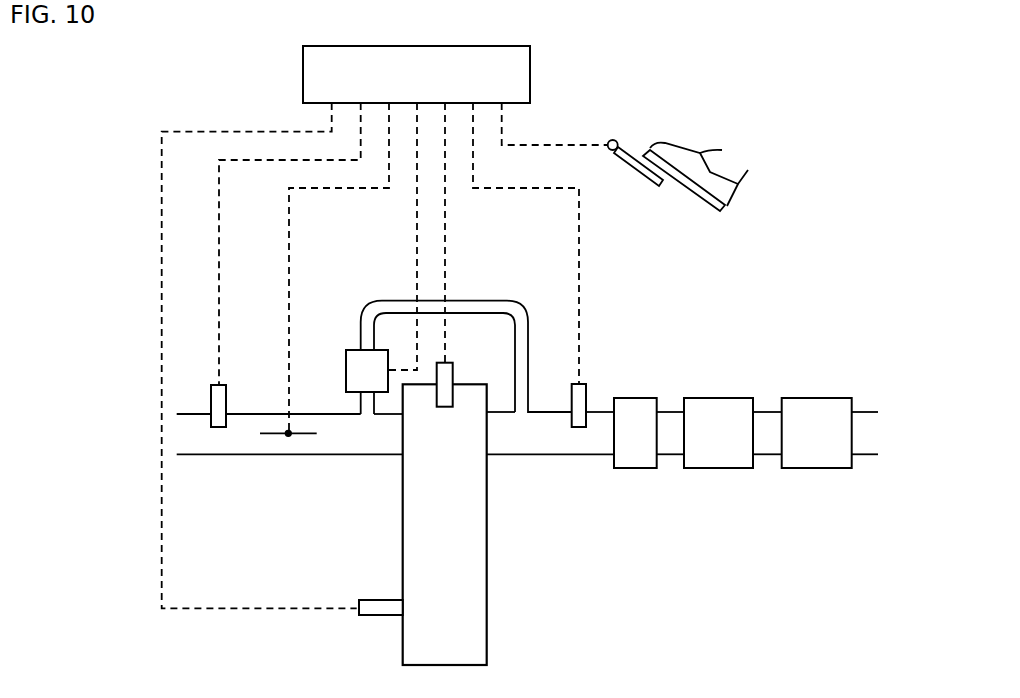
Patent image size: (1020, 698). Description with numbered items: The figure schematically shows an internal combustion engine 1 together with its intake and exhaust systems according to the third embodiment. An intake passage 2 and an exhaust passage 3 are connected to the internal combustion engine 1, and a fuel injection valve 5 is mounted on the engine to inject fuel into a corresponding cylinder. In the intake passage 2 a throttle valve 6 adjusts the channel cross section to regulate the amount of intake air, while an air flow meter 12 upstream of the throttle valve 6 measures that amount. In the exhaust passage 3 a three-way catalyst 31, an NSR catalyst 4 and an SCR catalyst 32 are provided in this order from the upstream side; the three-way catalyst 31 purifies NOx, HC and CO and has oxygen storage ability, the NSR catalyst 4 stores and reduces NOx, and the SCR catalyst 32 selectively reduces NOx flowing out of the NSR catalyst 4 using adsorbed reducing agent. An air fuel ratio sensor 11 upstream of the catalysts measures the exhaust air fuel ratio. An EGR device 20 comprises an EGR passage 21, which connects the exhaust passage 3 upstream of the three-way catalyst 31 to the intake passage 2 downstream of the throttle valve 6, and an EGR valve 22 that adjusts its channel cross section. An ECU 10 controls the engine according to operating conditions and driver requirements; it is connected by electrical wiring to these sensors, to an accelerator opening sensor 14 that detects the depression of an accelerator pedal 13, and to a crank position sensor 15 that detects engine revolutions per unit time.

The internal combustion engine 1 is at (487, 627).
The intake passage 2 is at (258, 455).
The exhaust passage 3 is at (557, 455).
The NOx storage reduction catalyst 4 is at (718, 468).
The fuel injection valve 5 is at (453, 368).
The throttle valve 6 is at (302, 433).
The ECU 10 is at (530, 72).
The air fuel ratio sensor 11 is at (570, 398).
The air flow meter 12 is at (226, 398).
The accelerator pedal 13 is at (682, 191).
The accelerator opening sensor 14 is at (617, 138).
The crank position sensor 15 is at (377, 600).
The EGR device 20 is at (361, 273).
The EGR passage 21 is at (498, 301).
The EGR valve 22 is at (345, 363).
The three-way catalyst 31 is at (635, 468).
The NOx selective catalytic reduction catalyst 32 is at (817, 468).